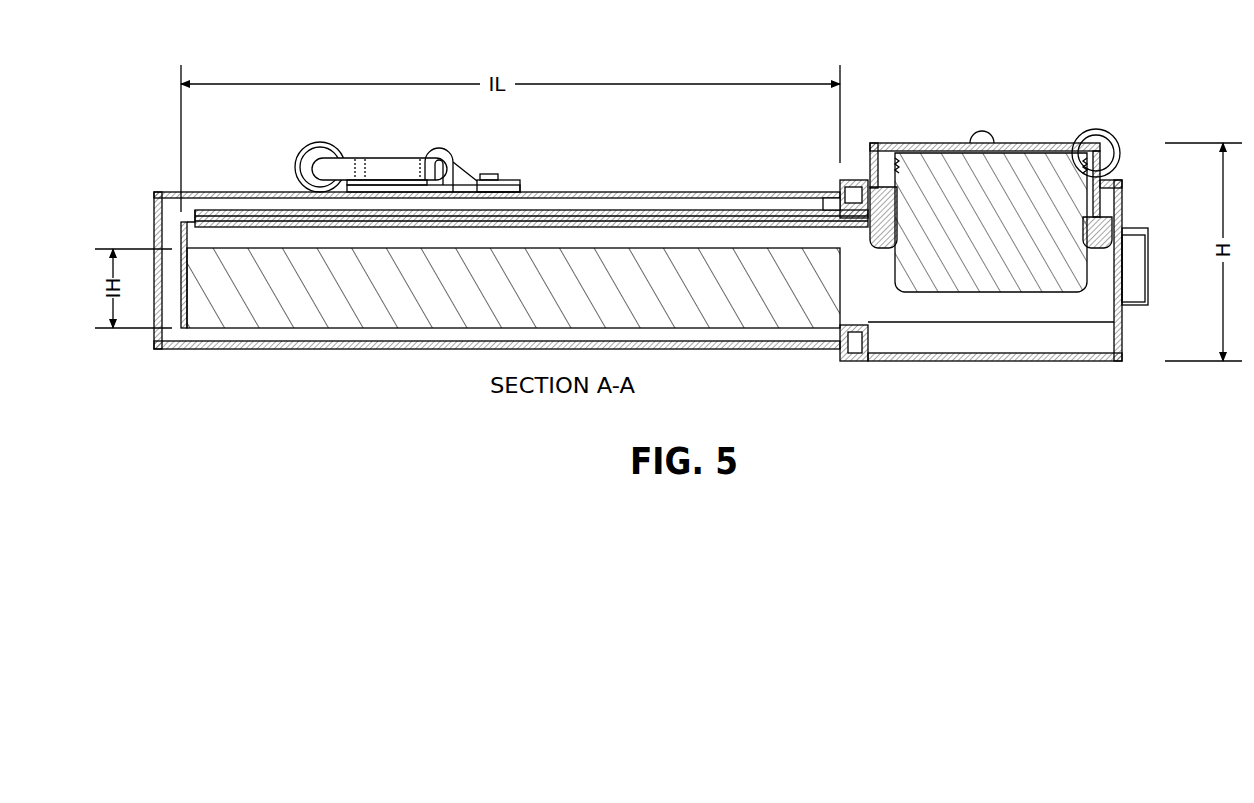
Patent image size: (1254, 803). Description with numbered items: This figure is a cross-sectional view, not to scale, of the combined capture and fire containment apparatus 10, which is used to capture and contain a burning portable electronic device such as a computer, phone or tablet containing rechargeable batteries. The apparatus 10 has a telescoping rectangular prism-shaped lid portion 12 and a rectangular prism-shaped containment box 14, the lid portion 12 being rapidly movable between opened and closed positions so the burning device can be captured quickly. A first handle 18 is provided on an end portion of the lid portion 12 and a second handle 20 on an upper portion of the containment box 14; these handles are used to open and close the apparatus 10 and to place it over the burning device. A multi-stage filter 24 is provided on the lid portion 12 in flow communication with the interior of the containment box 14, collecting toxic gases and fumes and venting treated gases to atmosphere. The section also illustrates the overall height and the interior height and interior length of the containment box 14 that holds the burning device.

The combined capture and fire containment apparatus 10 is at (964, 98).
The lid portion 12 is at (1035, 362).
The containment box 14 is at (215, 350).
The first handle 18 is at (1133, 285).
The second handle 20 is at (306, 150).
The multi-stage filter 24 is at (1004, 236).